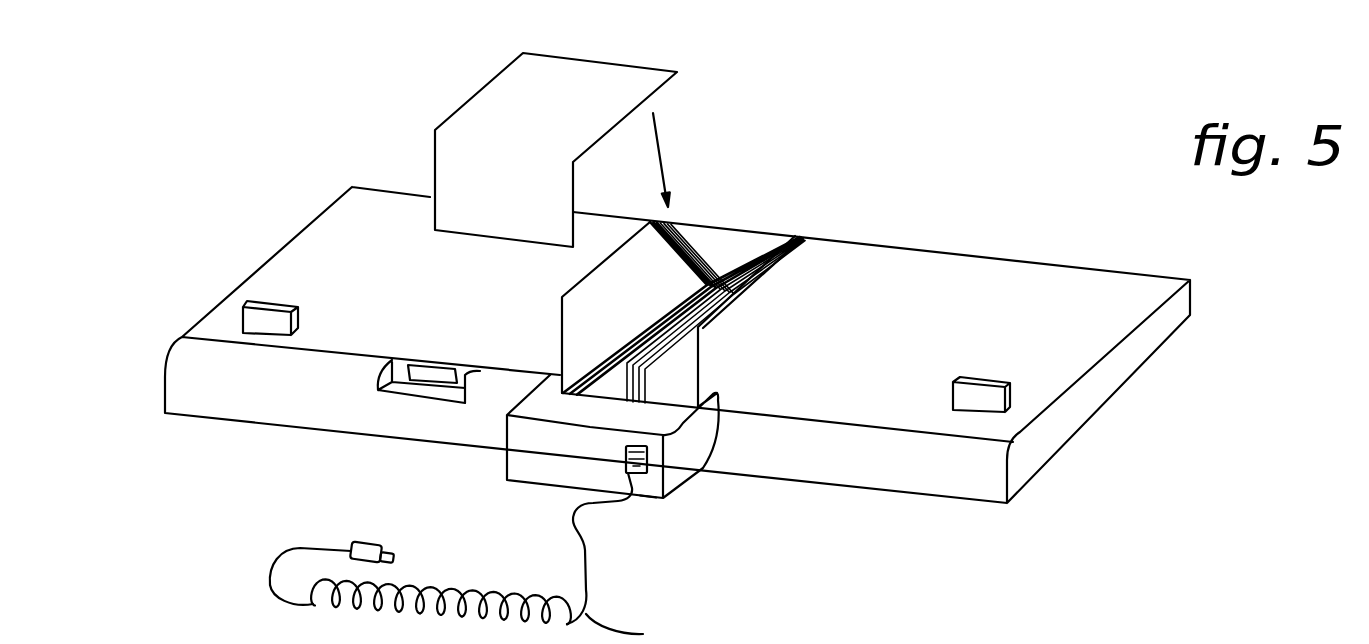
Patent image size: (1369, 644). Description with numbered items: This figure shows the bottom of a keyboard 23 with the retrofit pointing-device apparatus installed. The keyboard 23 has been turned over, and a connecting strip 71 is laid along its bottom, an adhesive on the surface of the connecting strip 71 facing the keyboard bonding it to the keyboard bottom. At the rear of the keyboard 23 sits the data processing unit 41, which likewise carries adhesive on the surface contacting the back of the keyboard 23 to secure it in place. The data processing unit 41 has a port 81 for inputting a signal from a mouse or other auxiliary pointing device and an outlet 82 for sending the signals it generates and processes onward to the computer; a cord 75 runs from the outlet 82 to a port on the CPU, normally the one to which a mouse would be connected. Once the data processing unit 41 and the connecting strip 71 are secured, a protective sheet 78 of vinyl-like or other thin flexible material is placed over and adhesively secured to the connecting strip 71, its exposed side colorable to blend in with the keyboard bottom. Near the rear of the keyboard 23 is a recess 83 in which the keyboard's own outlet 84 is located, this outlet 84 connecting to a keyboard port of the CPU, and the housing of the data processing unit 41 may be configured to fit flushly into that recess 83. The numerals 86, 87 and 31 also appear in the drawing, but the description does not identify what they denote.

The keyboard 23 is at (930, 228).
The protective sheet 78 is at (475, 122).
The connecting strip 71 is at (560, 288).
The recess 83 is at (401, 388).
The outlet 84 is at (432, 378).
The data processing unit 41 is at (508, 457).
The outlet 82 is at (625, 458).
The port 81 is at (647, 497).
The cord 75 is at (643, 634).
The component 86 is at (942, 643).
The component 87 is at (1027, 643).
The component 31 is at (1301, 630).